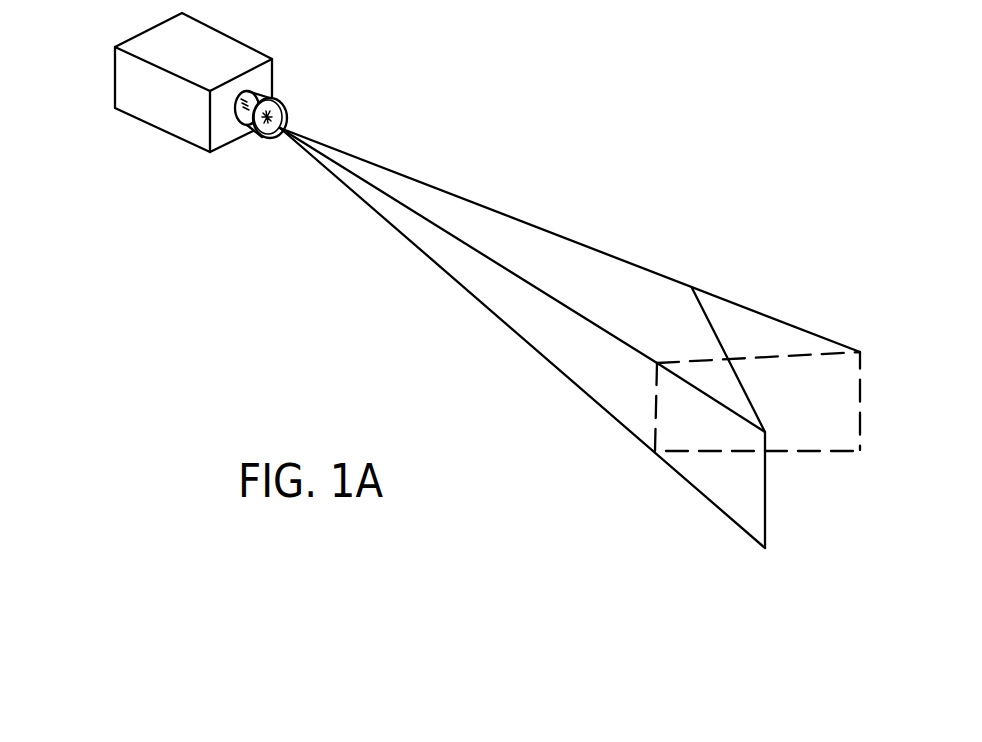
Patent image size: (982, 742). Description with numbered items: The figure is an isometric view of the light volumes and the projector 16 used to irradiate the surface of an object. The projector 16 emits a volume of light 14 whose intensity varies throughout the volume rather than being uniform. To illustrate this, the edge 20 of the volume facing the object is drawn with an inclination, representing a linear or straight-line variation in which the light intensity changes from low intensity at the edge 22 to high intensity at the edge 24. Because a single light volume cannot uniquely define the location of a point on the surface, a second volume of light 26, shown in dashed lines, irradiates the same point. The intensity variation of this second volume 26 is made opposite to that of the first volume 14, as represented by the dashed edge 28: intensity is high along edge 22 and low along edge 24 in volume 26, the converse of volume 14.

The volume of light 14 is at (630, 317).
The projector 16 is at (237, 15).
The edge of the light volume 20 is at (710, 322).
The edge 22 is at (507, 215).
The edge 24 is at (558, 341).
The second volume of light 26 is at (801, 335).
The dashed edge 28 is at (822, 432).